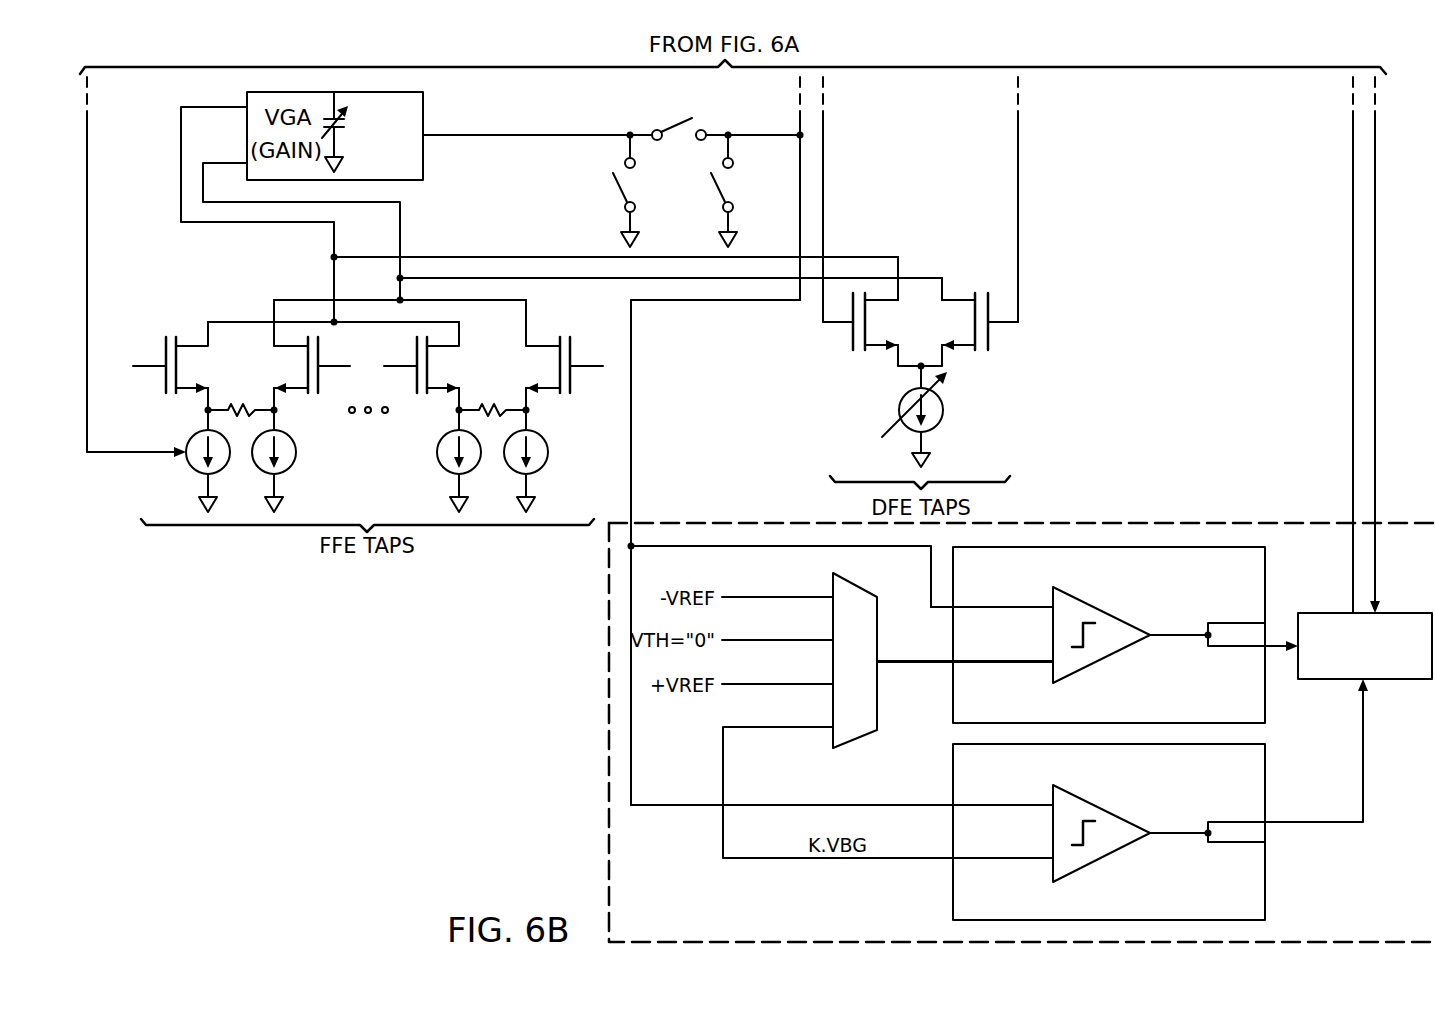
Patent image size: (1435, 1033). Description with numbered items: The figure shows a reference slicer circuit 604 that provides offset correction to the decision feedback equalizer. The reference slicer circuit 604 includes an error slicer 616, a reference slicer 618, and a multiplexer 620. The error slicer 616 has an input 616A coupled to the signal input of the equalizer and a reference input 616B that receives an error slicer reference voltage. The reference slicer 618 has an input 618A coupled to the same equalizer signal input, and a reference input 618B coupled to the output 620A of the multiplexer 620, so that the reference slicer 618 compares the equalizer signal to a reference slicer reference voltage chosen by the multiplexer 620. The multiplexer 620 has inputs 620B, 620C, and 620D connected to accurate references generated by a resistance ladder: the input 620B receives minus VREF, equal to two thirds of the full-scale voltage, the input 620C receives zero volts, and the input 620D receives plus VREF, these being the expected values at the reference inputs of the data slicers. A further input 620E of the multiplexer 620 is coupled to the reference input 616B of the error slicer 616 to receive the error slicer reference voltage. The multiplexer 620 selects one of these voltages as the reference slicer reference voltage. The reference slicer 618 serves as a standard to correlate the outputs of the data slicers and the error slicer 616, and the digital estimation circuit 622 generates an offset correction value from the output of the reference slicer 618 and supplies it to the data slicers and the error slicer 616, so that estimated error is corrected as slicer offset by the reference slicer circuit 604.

The reference slicer circuit 604 is at (1163, 518).
The error slicer 616 is at (1276, 877).
The input 616A is at (1003, 805).
The reference input 616B is at (1003, 860).
The reference slicer 618 is at (1276, 602).
The input 618A is at (1003, 607).
The reference input 618B is at (1003, 662).
The multiplexer 620 is at (860, 748).
The output 620A is at (898, 662).
The input 620B is at (827, 595).
The input 620C is at (827, 640).
The input 620D is at (827, 684).
The input 620E is at (827, 727).
The digital estimation circuit 622 is at (1383, 680).